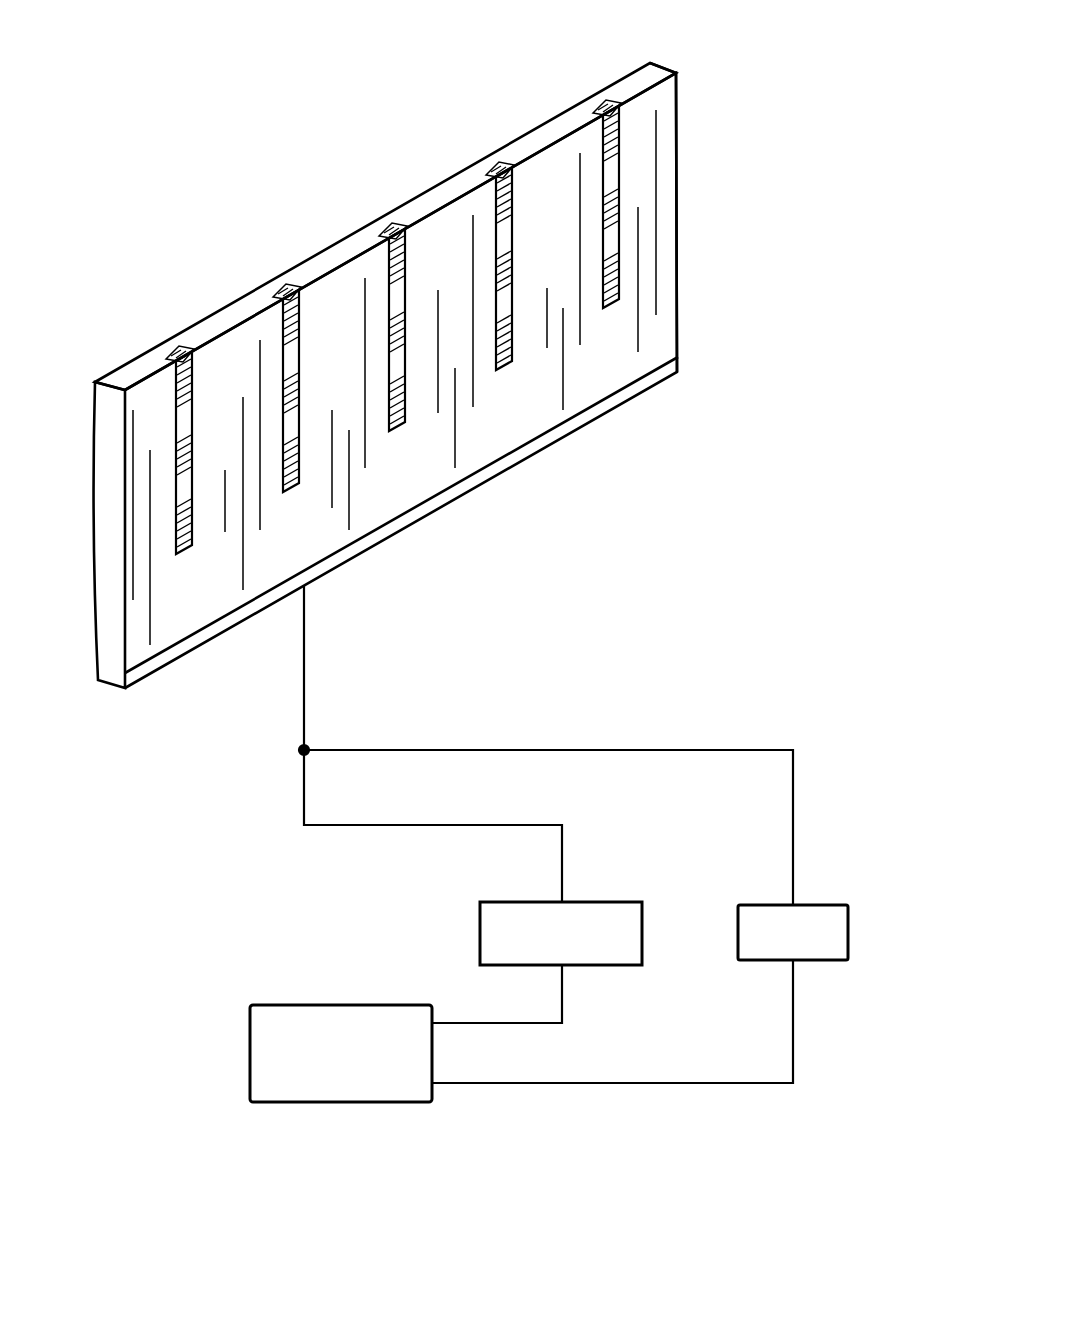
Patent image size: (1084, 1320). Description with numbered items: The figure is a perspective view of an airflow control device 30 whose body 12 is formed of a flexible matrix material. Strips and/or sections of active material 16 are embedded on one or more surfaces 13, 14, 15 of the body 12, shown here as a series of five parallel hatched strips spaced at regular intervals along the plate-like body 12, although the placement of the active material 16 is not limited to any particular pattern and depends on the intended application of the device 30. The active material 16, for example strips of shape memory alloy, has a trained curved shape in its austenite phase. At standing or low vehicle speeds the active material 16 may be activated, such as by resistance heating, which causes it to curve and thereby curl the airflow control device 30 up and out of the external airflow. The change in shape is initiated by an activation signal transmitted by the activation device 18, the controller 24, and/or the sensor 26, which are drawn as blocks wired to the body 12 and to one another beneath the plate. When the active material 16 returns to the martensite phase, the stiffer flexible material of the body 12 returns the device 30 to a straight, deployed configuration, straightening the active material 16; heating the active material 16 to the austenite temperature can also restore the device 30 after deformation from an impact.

The airflow control device 30 is at (346, 120).
The body 12 is at (217, 308).
The surface 13 is at (613, 80).
The surface 14 is at (542, 132).
The surface 15 is at (447, 402).
The active material 16 is at (500, 368).
The activation device 18 is at (598, 902).
The controller 24 is at (318, 1005).
The sensor 26 is at (848, 922).